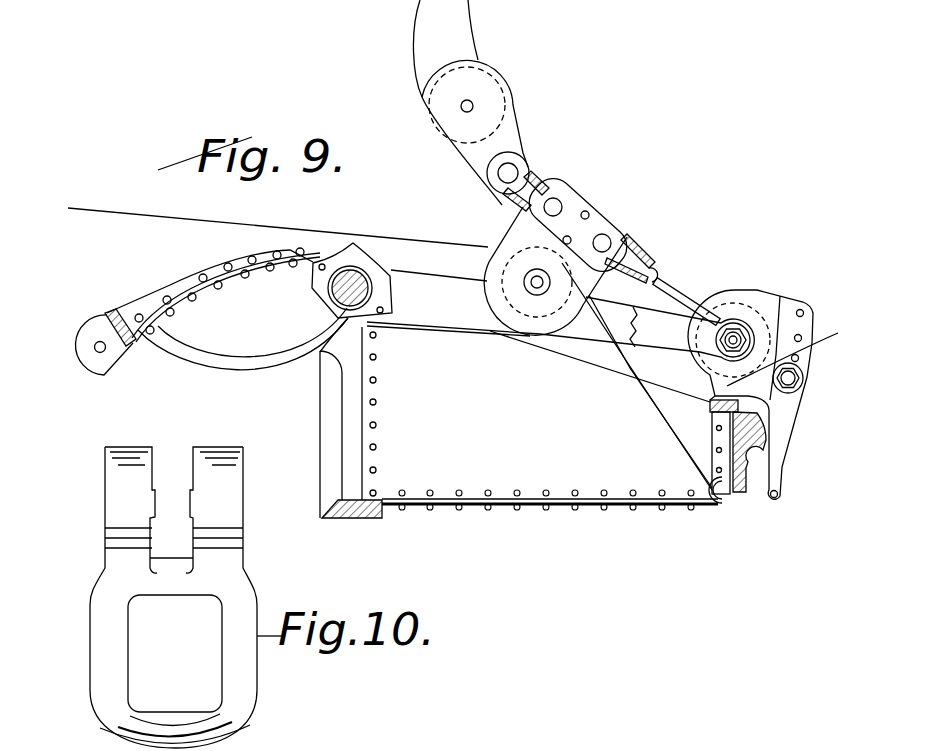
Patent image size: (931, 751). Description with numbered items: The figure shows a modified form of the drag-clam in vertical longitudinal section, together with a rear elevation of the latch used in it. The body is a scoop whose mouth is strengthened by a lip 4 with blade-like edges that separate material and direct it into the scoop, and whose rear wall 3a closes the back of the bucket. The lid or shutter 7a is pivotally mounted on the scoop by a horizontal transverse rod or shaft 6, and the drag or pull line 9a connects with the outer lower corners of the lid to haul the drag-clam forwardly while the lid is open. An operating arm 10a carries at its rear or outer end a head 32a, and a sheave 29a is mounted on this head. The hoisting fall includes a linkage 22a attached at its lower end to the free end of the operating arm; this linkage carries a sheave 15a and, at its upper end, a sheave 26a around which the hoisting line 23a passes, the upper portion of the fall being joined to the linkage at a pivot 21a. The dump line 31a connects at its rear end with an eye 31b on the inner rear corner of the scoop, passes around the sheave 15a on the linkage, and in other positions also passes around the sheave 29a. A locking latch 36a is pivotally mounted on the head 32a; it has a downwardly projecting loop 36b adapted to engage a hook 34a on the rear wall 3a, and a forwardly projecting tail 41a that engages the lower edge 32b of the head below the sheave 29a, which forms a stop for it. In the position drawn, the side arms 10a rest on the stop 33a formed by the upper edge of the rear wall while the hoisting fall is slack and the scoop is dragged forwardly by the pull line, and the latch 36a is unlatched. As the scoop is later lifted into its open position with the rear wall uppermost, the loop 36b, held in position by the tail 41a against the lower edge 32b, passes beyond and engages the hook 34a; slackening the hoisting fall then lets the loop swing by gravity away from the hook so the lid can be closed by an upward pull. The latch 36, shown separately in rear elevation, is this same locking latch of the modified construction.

In FIG. 9, the hoisting line 23a is at (472, 32).
In FIG. 9, the arm pivot pin 21a is at (520, 133).
In FIG. 9, the sheave 26a is at (505, 98).
In FIG. 9, the linkage 22a is at (657, 276).
In FIG. 9, the sheave 15a is at (522, 316).
In FIG. 9, the dump line 31a is at (198, 208).
In FIG. 9, the drag or pull line 9a is at (95, 346).
In FIG. 9, the lid or shutter 7a is at (197, 292).
In FIG. 9, the horizontal transverse rod or shaft 6 is at (372, 295).
In FIG. 9, the operating arm 10a is at (560, 315).
In FIG. 9, the sheave 29a is at (731, 297).
In FIG. 9, the head 32a is at (790, 310).
In FIG. 9, the lower edge of the head 32b is at (794, 348).
In FIG. 9, the locking latch 36a is at (803, 370).
In FIG. 9, the hook 34a is at (766, 450).
In FIG. 9, the loop 36b is at (780, 491).
In FIG. 9, the rear wall 3a is at (727, 497).
In FIG. 9, the eye 31b is at (703, 487).
In FIG. 9, the stop 33a is at (712, 400).
In FIG. 9, the tail 41a is at (728, 392).
In FIG. 9, the lip 4 is at (333, 520).
In FIG. 10, the shackle 36 is at (106, 562).